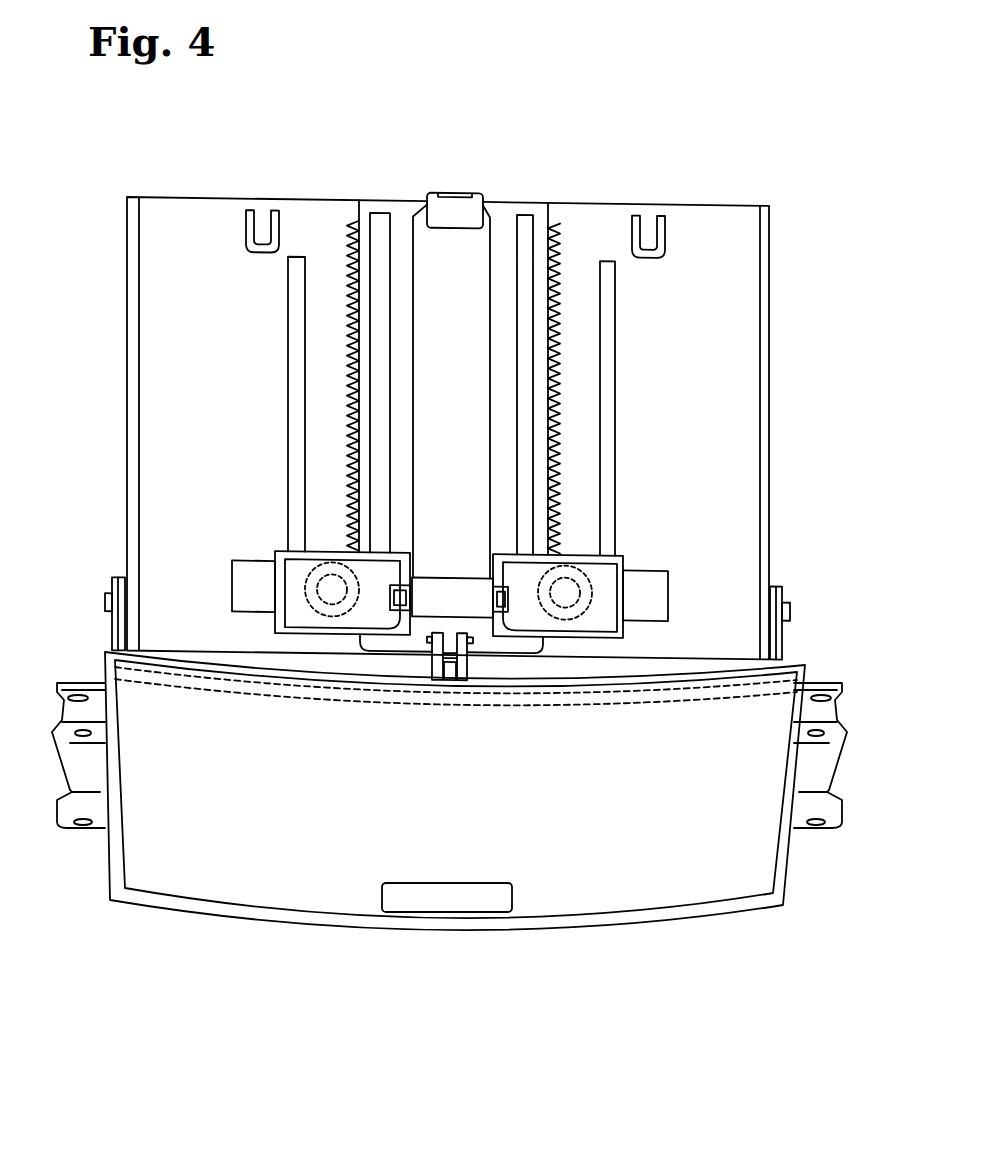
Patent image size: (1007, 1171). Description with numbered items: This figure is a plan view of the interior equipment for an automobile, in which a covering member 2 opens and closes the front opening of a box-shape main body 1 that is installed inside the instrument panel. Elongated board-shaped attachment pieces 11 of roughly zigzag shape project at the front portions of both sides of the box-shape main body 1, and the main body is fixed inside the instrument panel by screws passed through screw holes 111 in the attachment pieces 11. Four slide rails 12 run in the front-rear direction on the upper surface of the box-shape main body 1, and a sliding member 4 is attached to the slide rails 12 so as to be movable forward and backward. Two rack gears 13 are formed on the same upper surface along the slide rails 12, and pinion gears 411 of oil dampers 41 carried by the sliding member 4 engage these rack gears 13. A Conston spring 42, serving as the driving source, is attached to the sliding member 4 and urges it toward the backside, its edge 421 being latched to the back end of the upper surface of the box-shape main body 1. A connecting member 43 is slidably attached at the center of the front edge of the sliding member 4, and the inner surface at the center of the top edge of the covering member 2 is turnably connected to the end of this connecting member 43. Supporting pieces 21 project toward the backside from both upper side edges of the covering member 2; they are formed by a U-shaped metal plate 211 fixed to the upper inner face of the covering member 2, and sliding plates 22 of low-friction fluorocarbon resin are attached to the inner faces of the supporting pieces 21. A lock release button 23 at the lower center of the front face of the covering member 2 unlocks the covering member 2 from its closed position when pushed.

The box-shape main body 1 is at (715, 233).
The attachment pieces 11 is at (67, 817).
The screw holes 111 is at (55, 732).
The slide rails 12 is at (383, 263).
The rack gears 13 is at (348, 252).
The covering member 2 is at (738, 863).
The supporting pieces 21 is at (112, 630).
The metal plate 211 is at (183, 657).
The sliding plates 22 is at (118, 593).
The lock release button 23 is at (455, 897).
The sliding member 4 is at (610, 573).
The oil dampers 41 is at (290, 578).
The pinion gears 411 is at (322, 578).
The Conston spring 42 is at (452, 592).
The edge of the Conston spring 421 is at (455, 213).
The connecting member 43 is at (462, 682).